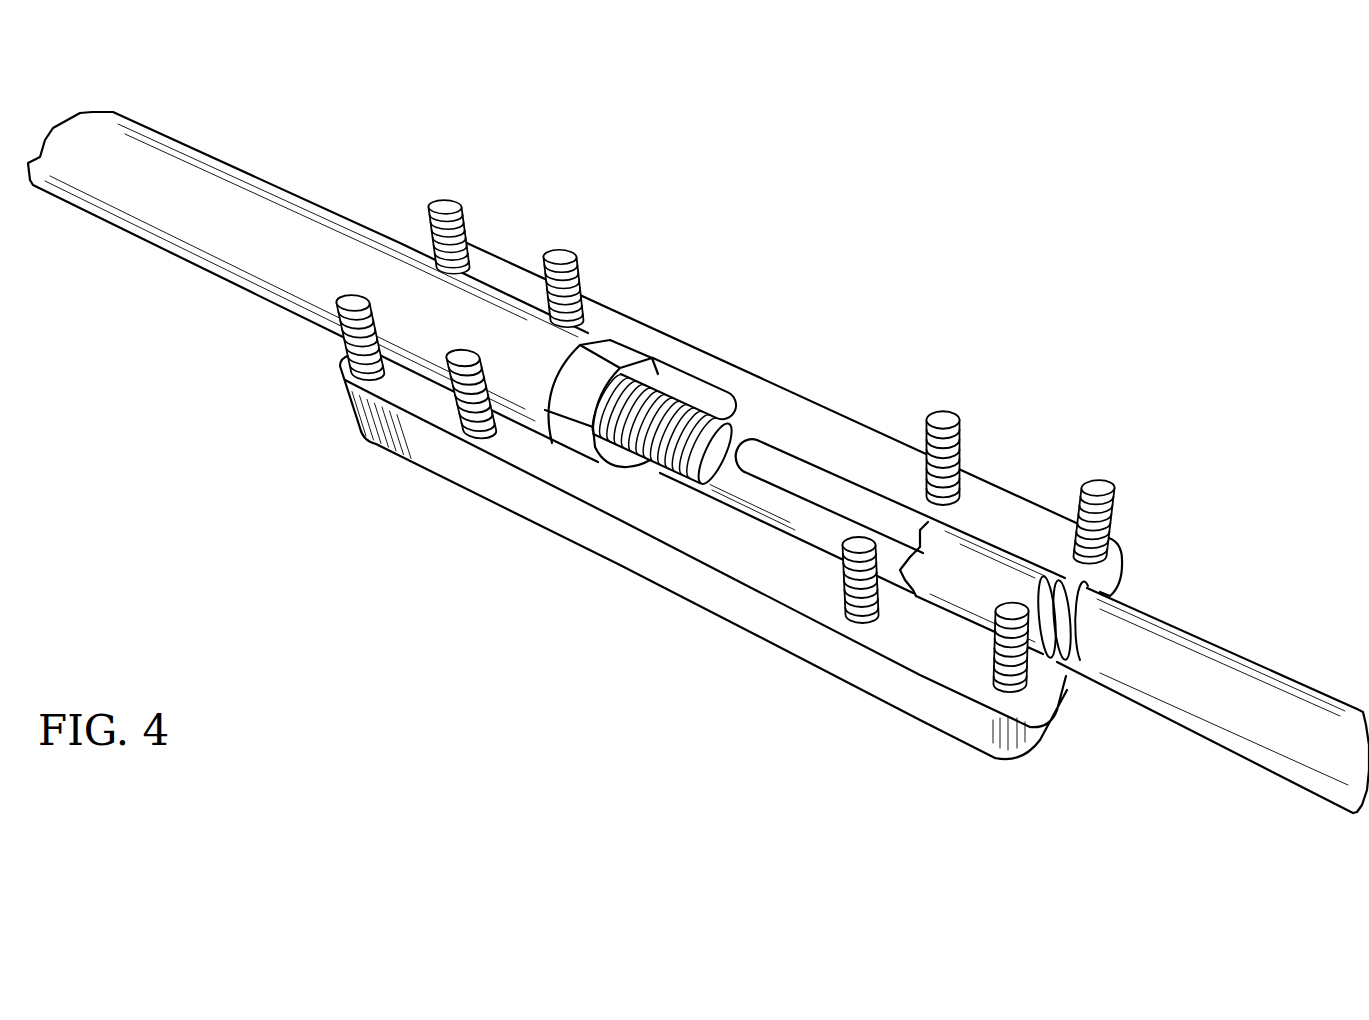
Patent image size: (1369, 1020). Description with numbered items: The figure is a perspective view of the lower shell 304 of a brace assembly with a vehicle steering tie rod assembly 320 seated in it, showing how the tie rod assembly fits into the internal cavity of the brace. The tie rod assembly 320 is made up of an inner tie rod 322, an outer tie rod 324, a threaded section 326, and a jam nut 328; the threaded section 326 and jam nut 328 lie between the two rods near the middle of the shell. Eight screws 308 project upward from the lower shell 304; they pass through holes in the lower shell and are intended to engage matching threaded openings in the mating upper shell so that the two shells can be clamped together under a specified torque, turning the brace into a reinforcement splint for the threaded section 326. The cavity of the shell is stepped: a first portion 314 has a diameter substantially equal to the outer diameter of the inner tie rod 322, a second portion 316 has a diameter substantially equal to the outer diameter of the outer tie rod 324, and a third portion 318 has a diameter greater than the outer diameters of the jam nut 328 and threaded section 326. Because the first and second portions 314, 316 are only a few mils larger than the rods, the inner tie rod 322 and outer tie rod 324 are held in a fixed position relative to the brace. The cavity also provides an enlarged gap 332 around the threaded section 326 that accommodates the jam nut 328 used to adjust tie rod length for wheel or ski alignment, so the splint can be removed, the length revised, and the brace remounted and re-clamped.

The lower shell 304 is at (777, 414).
The screws 308 is at (783, 446).
The first portion 314 is at (901, 637).
The second portion 316 is at (377, 431).
The third portion 318 is at (687, 569).
The tie rod assembly 320 is at (268, 163).
The inner tie rod 322 is at (1063, 626).
The outer tie rod 324 is at (313, 287).
The threaded section 326 is at (700, 403).
The jam nut 328 is at (643, 355).
The gap 332 is at (595, 537).